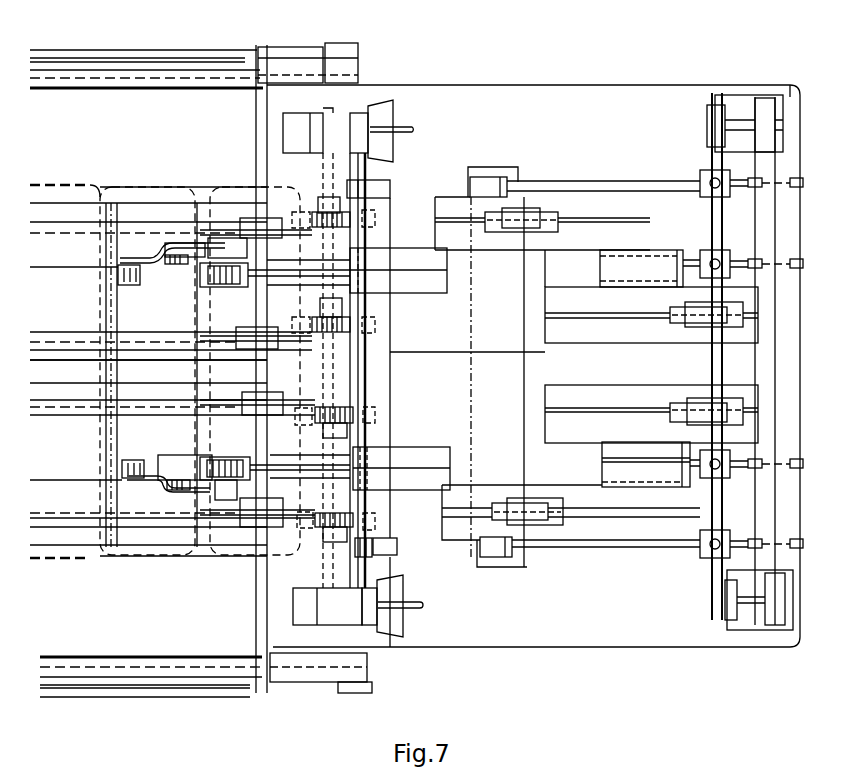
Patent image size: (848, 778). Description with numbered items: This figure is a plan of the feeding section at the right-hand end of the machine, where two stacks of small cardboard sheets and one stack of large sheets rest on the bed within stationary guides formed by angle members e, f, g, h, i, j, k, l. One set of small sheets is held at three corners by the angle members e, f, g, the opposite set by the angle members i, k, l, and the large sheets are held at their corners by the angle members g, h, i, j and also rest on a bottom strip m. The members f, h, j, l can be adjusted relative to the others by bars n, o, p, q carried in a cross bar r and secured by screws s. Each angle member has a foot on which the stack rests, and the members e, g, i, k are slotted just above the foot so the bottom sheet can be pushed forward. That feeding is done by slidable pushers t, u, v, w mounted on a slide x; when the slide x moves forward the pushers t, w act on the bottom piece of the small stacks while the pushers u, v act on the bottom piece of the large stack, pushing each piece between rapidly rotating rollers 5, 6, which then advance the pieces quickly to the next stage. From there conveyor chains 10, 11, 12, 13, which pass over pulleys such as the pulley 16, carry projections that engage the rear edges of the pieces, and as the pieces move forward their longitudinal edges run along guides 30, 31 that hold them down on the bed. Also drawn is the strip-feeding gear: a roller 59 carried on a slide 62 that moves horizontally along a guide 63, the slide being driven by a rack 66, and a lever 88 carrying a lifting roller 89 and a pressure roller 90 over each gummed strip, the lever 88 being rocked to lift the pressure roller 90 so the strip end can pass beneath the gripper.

The rack 66 is at (52, 58).
The guide 63 is at (157, 80).
The slide 62 is at (300, 58).
The guide 30 is at (147, 197).
The lever 88 is at (190, 243).
The conveyor chain 13 is at (172, 251).
The pressure roller 90 is at (118, 276).
The lifting roller 89 is at (170, 265).
The roller 59 is at (200, 281).
The conveyor chain 12 is at (148, 336).
The guide 31 is at (163, 353).
The conveyor chain 11 is at (157, 404).
The conveyor chain 10 is at (160, 512).
The pulley 16 is at (298, 229).
The roller 5 is at (321, 228).
The roller 6 is at (372, 225).
The angle member k is at (391, 187).
The angle member l is at (470, 184).
The pusher w is at (494, 228).
The slide x is at (554, 297).
The angle member j is at (603, 276).
The angle member i is at (406, 294).
The bar q is at (682, 181).
The screw s is at (712, 178).
The bar p is at (692, 260).
The pusher v is at (672, 322).
The cross bar r is at (712, 364).
The pusher u is at (672, 404).
The bottom strip m is at (450, 366).
The angle member g is at (410, 484).
The angle member h is at (605, 466).
The bar o is at (742, 469).
The pusher t is at (515, 500).
The angle member f is at (480, 551).
The bar n is at (627, 548).
The angle member e is at (397, 544).